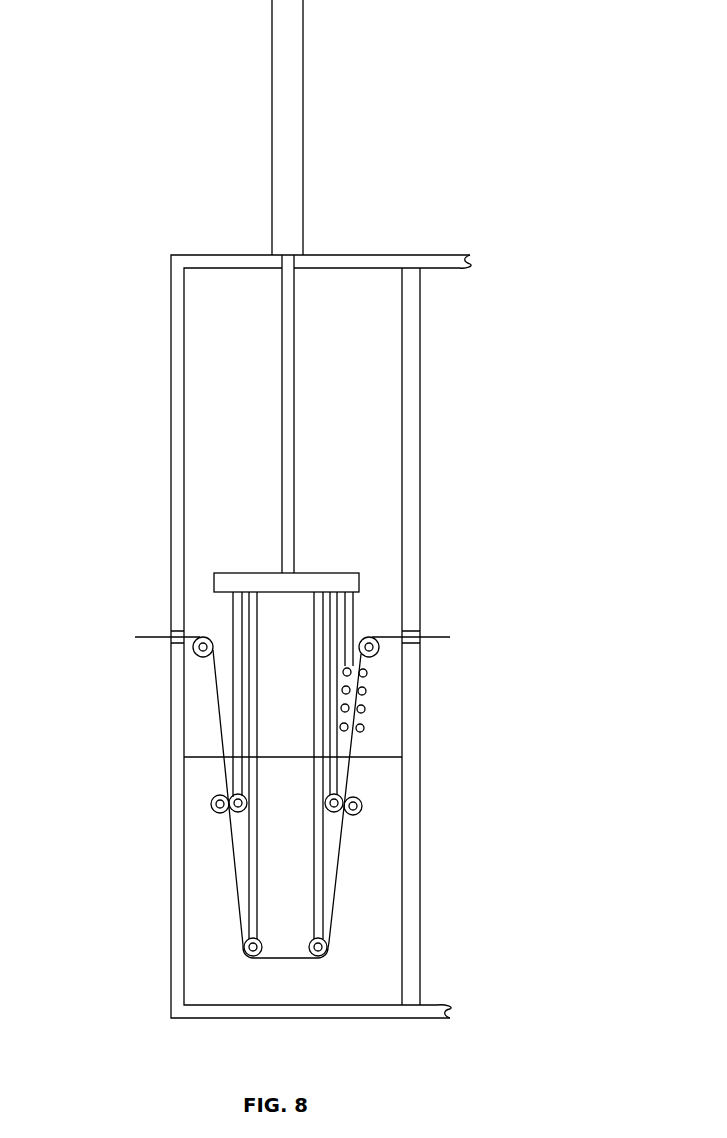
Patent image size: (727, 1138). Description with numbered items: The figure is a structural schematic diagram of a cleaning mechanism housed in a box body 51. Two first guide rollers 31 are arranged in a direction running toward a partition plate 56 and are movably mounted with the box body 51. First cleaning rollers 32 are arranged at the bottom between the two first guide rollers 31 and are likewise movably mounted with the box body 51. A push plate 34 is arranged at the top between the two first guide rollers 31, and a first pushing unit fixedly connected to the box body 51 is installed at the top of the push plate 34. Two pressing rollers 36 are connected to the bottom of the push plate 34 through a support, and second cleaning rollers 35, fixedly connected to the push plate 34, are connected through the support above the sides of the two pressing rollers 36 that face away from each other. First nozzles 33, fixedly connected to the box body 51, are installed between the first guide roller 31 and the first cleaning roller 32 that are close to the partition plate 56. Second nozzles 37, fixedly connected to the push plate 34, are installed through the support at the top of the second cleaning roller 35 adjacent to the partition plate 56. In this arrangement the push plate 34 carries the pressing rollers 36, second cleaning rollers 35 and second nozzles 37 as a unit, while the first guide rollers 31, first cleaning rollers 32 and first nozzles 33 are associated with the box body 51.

The box body 51 is at (170, 448).
The partition plate 56 is at (402, 438).
The push plate 34 is at (323, 573).
The second nozzles 37 is at (345, 670).
The first guide rollers 31 is at (204, 655).
The first nozzles 33 is at (363, 711).
The first cleaning rollers 32 is at (212, 808).
The second cleaning rollers 35 is at (243, 810).
The pressing rollers 36 is at (243, 948).